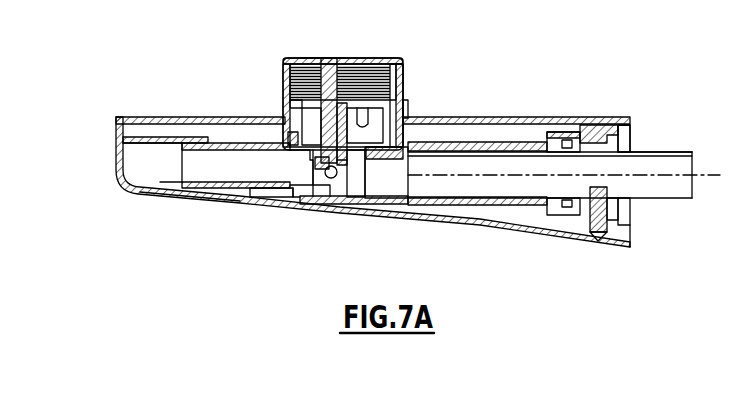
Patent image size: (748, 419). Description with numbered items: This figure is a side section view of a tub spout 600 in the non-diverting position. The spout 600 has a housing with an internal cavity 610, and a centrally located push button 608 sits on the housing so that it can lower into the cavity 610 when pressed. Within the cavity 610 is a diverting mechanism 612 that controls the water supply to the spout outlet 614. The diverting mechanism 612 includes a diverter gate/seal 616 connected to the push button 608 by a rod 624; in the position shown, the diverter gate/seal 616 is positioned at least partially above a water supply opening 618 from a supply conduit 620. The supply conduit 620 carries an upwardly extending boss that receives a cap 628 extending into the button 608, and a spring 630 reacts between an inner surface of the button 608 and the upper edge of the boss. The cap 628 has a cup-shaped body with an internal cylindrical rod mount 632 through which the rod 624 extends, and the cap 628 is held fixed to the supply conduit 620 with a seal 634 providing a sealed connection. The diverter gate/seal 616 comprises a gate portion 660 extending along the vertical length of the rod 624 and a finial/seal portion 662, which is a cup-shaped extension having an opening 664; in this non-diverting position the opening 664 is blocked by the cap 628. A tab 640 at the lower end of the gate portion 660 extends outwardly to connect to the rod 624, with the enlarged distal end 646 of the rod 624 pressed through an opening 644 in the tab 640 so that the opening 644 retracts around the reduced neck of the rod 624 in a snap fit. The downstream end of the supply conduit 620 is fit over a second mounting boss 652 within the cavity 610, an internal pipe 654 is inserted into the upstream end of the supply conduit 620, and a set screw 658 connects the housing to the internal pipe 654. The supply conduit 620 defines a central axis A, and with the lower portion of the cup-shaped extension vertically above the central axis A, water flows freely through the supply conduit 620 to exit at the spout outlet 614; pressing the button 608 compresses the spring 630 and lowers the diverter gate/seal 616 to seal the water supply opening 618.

The spout 600 is at (157, 90).
The push button 608 is at (318, 58).
The cavity 610 is at (425, 133).
The diverting mechanism 612 is at (403, 172).
The spout outlet 614 is at (150, 193).
The diverter gate/seal 616 is at (308, 126).
The water supply opening 618 is at (206, 165).
The supply conduit 620 is at (250, 190).
The rod 624 is at (329, 62).
The cap 628 is at (289, 90).
The spring 630 is at (403, 72).
The rod mount 632 is at (288, 65).
The seal 634 is at (407, 118).
The tab 640 is at (317, 162).
The opening 644 is at (314, 172).
The distal end 646 is at (320, 188).
The second mounting boss 652 is at (603, 148).
The internal pipe 654 is at (665, 151).
The set screw 658 is at (597, 242).
The gate portion 660 is at (357, 140).
The finial/seal portion 662 is at (365, 126).
The opening 664 is at (366, 149).
The central axis A is at (710, 175).